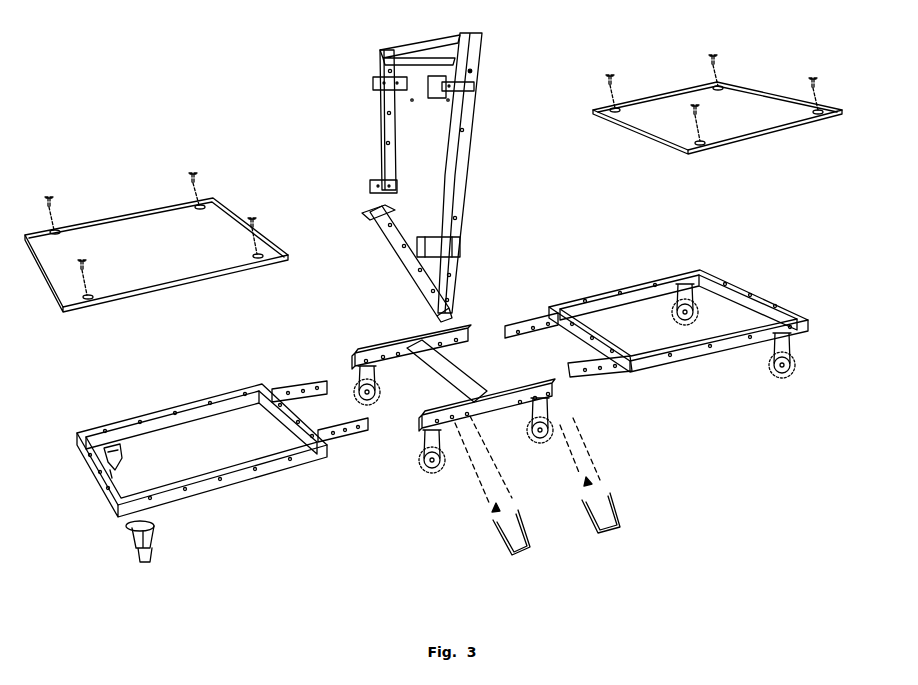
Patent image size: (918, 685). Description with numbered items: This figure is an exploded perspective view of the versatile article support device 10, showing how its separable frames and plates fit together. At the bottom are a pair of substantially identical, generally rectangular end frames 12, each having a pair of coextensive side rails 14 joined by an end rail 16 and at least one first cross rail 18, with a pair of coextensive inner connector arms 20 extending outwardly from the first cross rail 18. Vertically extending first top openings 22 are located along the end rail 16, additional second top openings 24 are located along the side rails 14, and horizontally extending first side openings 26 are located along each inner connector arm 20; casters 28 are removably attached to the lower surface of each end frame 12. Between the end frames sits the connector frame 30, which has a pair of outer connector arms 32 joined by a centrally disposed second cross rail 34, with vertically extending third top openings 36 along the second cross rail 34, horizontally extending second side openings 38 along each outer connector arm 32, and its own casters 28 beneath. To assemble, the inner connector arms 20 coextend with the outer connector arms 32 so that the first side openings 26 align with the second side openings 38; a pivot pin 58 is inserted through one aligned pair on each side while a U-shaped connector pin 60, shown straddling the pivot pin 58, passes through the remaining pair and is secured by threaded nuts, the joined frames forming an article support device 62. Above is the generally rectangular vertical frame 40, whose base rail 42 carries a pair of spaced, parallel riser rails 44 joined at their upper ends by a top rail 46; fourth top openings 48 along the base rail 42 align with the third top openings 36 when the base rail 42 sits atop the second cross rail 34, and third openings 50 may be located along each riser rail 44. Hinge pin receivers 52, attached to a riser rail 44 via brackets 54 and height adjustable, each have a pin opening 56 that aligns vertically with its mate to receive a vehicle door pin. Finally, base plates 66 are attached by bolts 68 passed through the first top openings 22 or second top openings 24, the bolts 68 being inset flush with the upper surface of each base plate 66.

The versatile article support device 10 is at (473, 574).
The end frame 12 is at (429, 384).
The side rail 14 is at (183, 418).
The end rail 16 is at (107, 478).
The first cross rail 18 is at (285, 431).
The inner connector arm 20 is at (316, 384).
The first top opening 22 is at (100, 448).
The second top opening 24 is at (562, 305).
The first side opening 26 is at (270, 372).
The caster 28 is at (162, 552).
The connector frame 30 is at (500, 422).
The outer connector arm 32 is at (412, 364).
The second cross rail 34 is at (421, 346).
The third top opening 36 is at (505, 383).
The second side opening 38 is at (372, 352).
The vertical frame 40 is at (419, 172).
The base rail 42 is at (385, 262).
The riser rail 44 is at (381, 154).
The top rail 46 is at (403, 60).
The fourth top opening 48 is at (366, 214).
The third opening 50 is at (470, 71).
The hinge pin receiver 52 is at (370, 82).
The bracket 54 is at (466, 98).
The pin opening 56 is at (388, 113).
The pivot pin 58 is at (578, 463).
The connector pin 60 is at (612, 515).
The article support device 62 is at (462, 245).
The base plate 66 is at (113, 224).
The bolt 68 is at (190, 176).